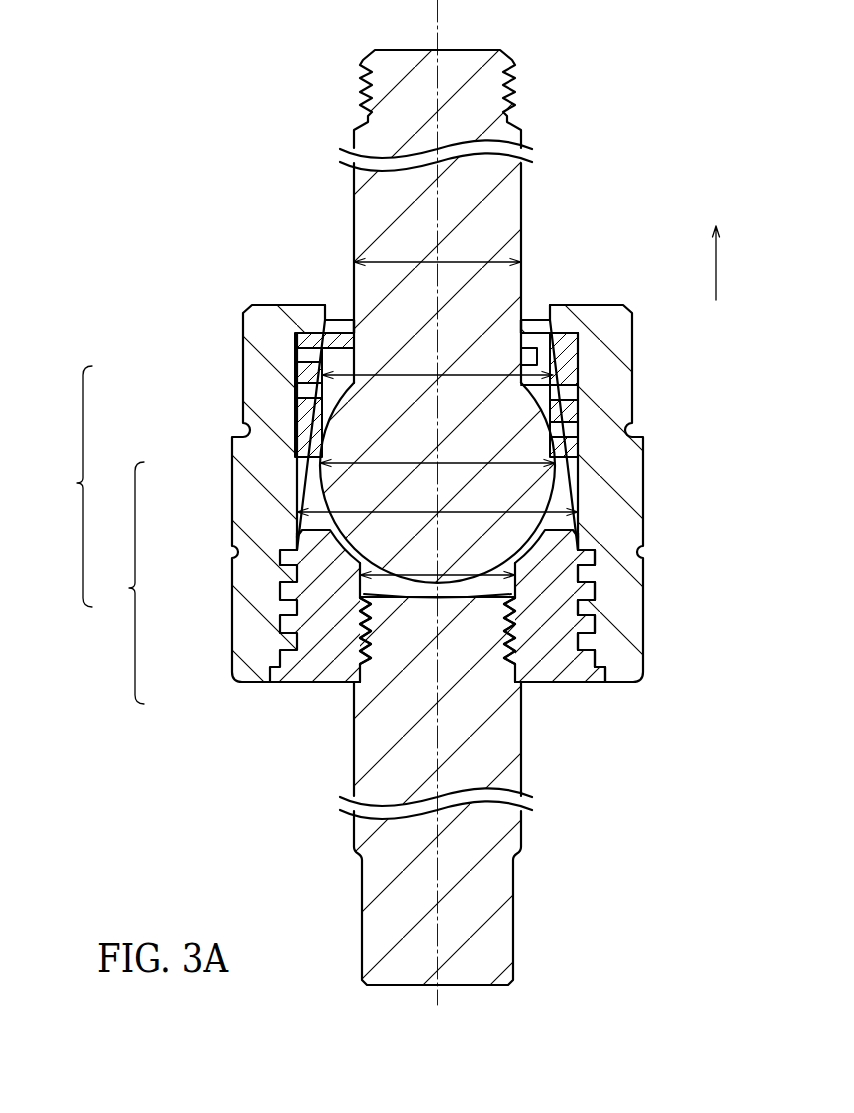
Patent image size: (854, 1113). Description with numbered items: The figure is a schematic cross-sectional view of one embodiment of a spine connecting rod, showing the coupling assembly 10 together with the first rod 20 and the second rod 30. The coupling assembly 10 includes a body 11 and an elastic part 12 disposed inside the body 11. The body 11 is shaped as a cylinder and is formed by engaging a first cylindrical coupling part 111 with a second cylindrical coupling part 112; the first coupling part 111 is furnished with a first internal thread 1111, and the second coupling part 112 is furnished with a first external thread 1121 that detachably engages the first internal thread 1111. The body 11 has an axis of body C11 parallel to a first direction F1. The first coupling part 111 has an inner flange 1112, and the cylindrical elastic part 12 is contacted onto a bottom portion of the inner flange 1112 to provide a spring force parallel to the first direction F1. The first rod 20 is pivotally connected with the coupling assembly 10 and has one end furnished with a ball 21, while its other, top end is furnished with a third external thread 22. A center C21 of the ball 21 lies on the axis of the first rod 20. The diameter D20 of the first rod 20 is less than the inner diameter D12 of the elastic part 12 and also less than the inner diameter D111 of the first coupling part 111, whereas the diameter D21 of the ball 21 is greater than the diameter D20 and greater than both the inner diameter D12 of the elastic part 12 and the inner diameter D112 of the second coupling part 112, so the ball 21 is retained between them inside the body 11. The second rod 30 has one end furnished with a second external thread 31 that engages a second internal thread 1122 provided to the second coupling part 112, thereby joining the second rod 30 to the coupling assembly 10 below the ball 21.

The coupling assembly 10 is at (68, 486).
The body 11 is at (120, 583).
The first cylindrical coupling part 111 is at (221, 490).
The first internal thread 1111 is at (596, 640).
The inner flange 1112 is at (339, 319).
The second cylindrical coupling part 112 is at (313, 672).
The first external thread 1121 is at (583, 624).
The second internal thread 1122 is at (355, 651).
The elastic part 12 is at (286, 378).
The first rod 20 is at (341, 216).
The ball 21 is at (500, 425).
The third external thread 22 is at (359, 80).
The second rod 30 is at (341, 832).
The second external thread 31 is at (373, 633).
The diameter of the first rod D20 is at (405, 262).
The diameter of the ball D21 is at (396, 461).
The inner diameter of the elastic part D12 is at (482, 375).
The inner diameter of the first coupling part D111 is at (582, 512).
The inner diameter of the second coupling part D112 is at (512, 566).
The center of the ball C21 is at (436, 470).
The axis of body C11 is at (440, 15).
The first direction F1 is at (734, 263).